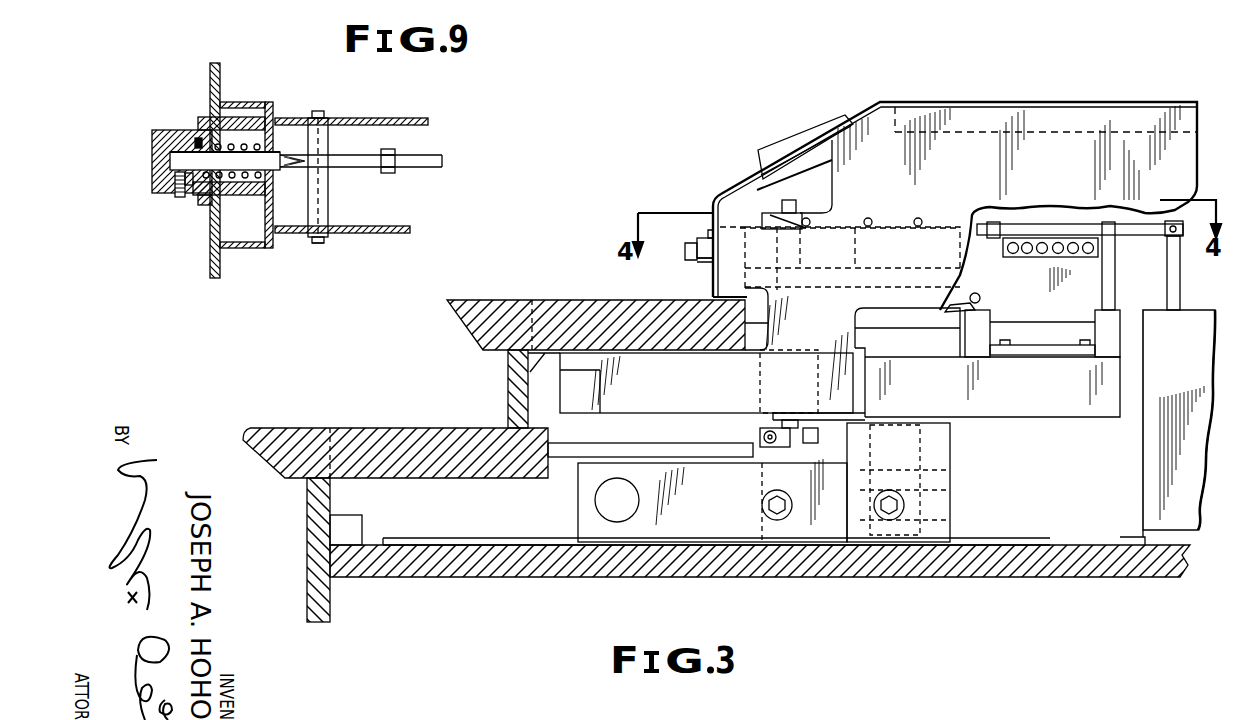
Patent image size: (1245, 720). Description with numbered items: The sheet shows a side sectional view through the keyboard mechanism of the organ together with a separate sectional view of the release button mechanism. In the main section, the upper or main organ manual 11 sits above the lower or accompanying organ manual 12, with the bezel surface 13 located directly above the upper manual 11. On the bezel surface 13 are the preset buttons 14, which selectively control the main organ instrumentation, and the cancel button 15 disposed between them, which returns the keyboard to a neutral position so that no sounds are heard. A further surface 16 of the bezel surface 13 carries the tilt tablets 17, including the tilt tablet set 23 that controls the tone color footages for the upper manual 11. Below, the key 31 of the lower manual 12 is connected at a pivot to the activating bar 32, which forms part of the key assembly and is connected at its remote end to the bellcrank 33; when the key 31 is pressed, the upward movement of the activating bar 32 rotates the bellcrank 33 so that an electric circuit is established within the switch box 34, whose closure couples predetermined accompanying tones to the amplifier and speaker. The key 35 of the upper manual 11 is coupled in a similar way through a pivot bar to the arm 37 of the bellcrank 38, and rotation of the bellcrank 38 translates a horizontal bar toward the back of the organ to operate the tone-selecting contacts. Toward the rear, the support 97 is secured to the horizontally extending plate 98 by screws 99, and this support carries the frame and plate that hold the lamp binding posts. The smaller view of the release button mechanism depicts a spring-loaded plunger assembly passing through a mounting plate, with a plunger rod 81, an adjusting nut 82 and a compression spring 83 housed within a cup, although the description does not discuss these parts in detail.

In FIG. 3, the upper or main organ manual 11 is at (584, 285).
In FIG. 3, the lower or accompanying organ manual 12 is at (385, 427).
In FIG. 3, the bezel surface 13 is at (713, 291).
In FIG. 3, the preset buttons 14 is at (700, 266).
In FIG. 9, the cancel button 15 is at (170, 130).
In FIG. 3, the cancel button 15 is at (697, 246).
In FIG. 3, the surface 16 is at (864, 110).
In FIG. 3, the tilt tablets 17 is at (787, 150).
In FIG. 3, the tilt tablet set 23 is at (752, 139).
In FIG. 3, the key 31 is at (506, 425).
In FIG. 3, the activating bar 32 is at (669, 450).
In FIG. 3, the bellcrank 33 is at (763, 436).
In FIG. 3, the switch box 34 is at (765, 484).
In FIG. 3, the key 35 is at (553, 300).
In FIG. 3, the arm 37 is at (950, 255).
In FIG. 3, the bellcrank 38 is at (981, 297).
In FIG. 9, the plunger rod 81 is at (160, 170).
In FIG. 9, the adjusting nut 82 is at (202, 207).
In FIG. 9, the compression spring 83 is at (258, 146).
In FIG. 3, the support 97 is at (1115, 310).
In FIG. 3, the horizontally extending plate 98 is at (1042, 417).
In FIG. 3, the screws 99 is at (1095, 348).